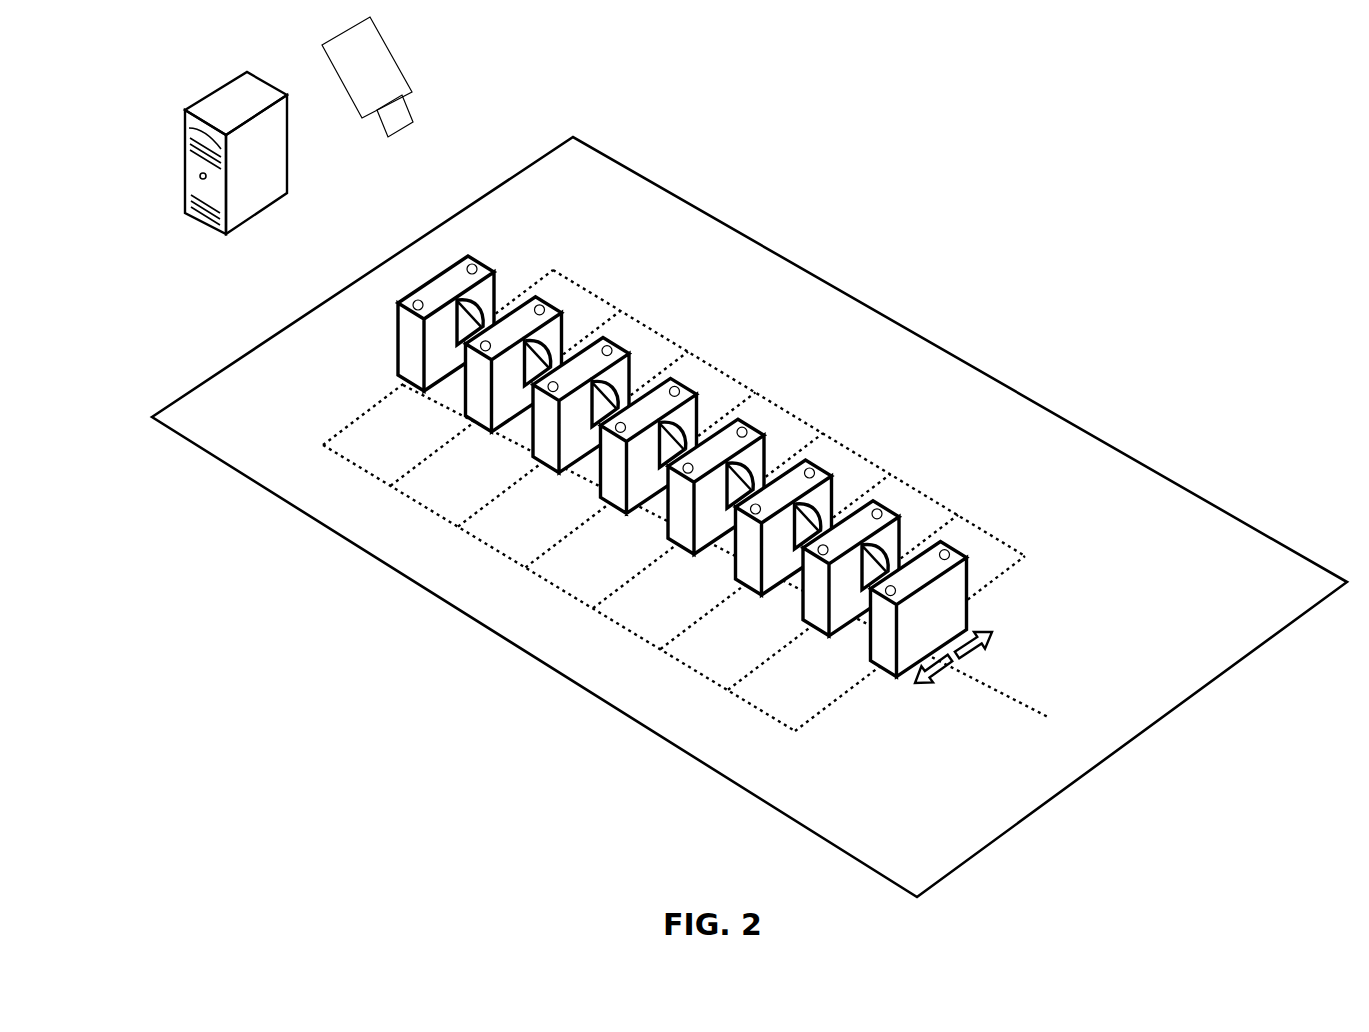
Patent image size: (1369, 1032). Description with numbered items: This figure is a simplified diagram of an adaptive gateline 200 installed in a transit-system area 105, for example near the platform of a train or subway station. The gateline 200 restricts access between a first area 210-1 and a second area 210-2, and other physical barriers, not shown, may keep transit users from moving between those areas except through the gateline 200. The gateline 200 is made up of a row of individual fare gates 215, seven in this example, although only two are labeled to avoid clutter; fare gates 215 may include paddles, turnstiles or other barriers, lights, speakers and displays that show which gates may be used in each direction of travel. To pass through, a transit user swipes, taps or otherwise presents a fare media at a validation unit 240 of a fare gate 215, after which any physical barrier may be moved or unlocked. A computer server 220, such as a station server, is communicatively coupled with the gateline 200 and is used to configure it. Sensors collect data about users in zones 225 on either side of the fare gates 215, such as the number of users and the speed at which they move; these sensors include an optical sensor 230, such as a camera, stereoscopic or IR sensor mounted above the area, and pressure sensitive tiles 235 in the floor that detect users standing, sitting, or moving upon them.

The workspace floor 105 is at (931, 838).
The gateline 200 is at (652, 424).
The first area 210-1 is at (953, 690).
The second area 210-2 is at (1007, 655).
The fare gate 215 is at (533, 294).
The computer server 220 is at (192, 215).
The zone 225 is at (763, 412).
The optical sensor 230 is at (397, 52).
The pressure sensitive tile 235 is at (815, 706).
The validation unit 240 is at (470, 264).